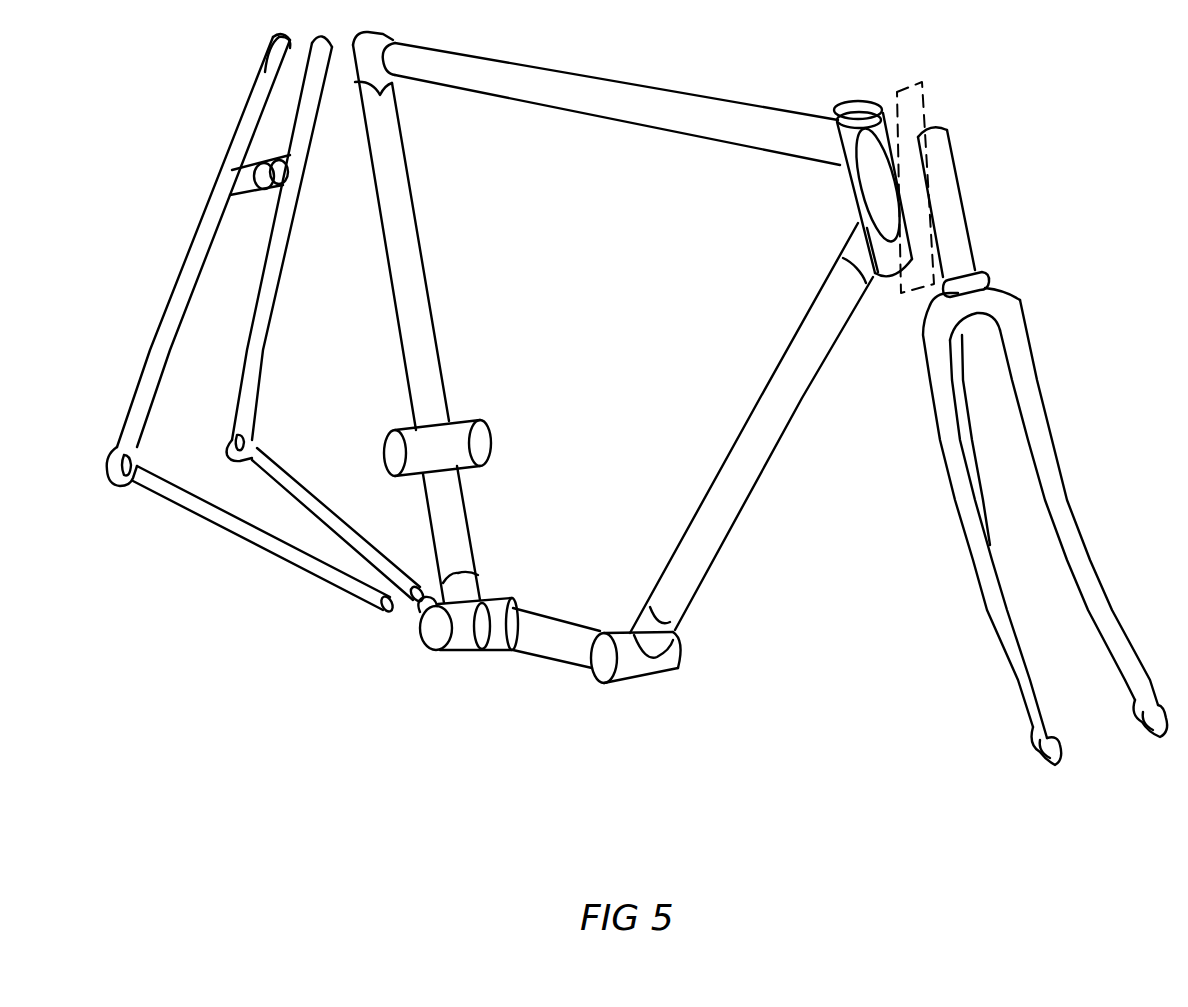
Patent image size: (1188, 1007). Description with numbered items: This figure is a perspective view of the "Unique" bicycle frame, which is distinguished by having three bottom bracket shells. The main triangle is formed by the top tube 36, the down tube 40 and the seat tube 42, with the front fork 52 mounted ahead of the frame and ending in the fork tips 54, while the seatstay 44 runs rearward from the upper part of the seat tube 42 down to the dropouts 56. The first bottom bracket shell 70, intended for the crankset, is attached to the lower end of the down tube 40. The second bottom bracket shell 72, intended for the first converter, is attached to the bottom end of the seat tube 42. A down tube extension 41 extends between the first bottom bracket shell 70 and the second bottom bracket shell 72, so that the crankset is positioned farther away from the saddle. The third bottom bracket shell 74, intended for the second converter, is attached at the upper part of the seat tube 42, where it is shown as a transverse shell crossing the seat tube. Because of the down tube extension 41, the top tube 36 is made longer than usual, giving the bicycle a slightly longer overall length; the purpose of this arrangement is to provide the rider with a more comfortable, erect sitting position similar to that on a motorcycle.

The top tube 36 is at (667, 57).
The down tube 40 is at (732, 527).
The down tube extension 41 is at (550, 667).
The seat tube 42 is at (422, 255).
The seatstay 44 is at (190, 303).
The fork 52 is at (968, 210).
The fork tips 54 is at (1142, 717).
The dropouts 56 is at (217, 436).
The first bottom bracket shell for crankset 70 is at (683, 648).
The second bottom bracket shell for first converter 72 is at (255, 453).
The third bottom bracket shell for second converter 74 is at (380, 443).